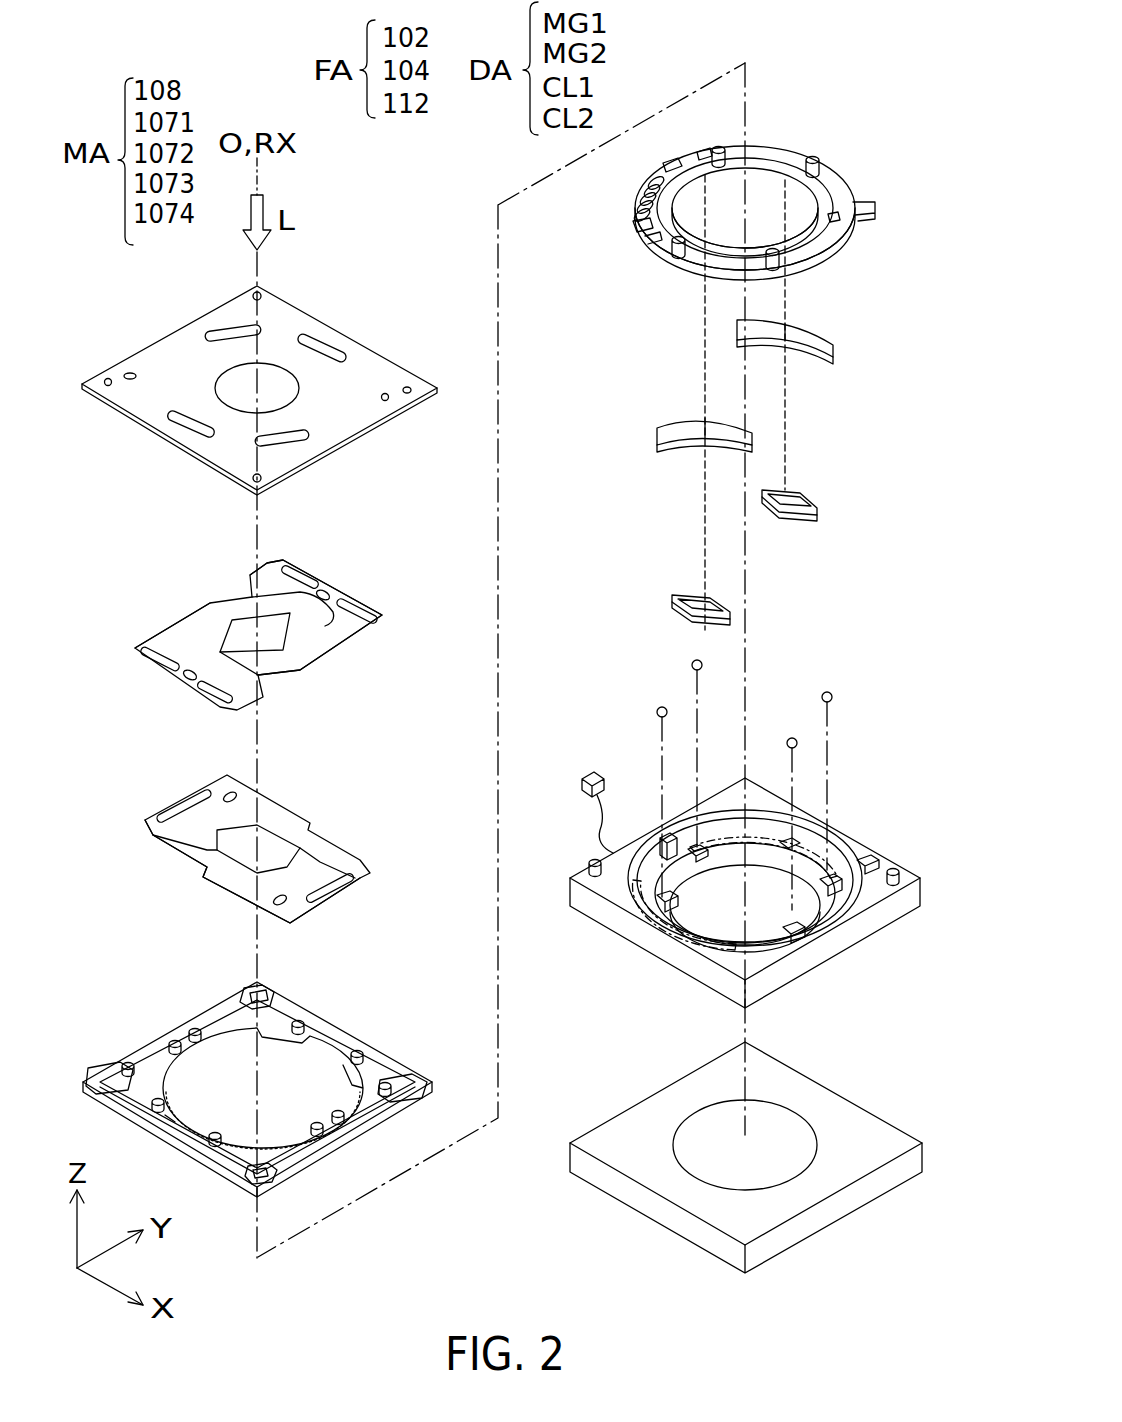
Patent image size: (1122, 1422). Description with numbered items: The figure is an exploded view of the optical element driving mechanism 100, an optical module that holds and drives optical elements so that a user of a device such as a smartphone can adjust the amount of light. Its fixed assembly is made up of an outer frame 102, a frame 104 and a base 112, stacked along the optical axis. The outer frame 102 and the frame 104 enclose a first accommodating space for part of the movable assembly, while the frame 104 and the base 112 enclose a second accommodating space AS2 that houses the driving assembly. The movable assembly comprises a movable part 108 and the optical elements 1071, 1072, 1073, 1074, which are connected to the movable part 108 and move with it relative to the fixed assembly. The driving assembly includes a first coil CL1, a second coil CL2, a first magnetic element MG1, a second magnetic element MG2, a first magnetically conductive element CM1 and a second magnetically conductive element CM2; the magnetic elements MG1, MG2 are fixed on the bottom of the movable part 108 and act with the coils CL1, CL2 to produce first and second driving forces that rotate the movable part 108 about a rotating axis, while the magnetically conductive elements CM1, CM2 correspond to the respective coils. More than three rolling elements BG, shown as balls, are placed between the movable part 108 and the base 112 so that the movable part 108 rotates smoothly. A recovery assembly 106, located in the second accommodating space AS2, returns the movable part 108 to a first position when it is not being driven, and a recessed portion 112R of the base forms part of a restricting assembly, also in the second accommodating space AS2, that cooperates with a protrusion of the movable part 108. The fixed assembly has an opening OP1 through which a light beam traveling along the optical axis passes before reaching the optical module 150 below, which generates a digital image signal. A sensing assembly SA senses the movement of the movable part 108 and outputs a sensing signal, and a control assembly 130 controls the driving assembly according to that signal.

The optical element driving mechanism 100 is at (108, 25).
The outer frame 102 is at (398, 360).
The frame 104 is at (402, 1062).
The recovery assembly 106 is at (623, 207).
The movable part 108 is at (840, 178).
The base 112 is at (770, 898).
The recessed portion 112R is at (868, 880).
The control assembly 130 is at (581, 774).
The optical module 150 is at (842, 1223).
The optical element 1071 is at (323, 638).
The optical element 1072 is at (327, 857).
The optical element 1073 is at (195, 632).
The optical element 1074 is at (230, 875).
The first magnetic element MG1 is at (682, 430).
The second magnetic element MG2 is at (812, 343).
The first coil CL1 is at (685, 593).
The second coil CL2 is at (812, 505).
The rolling elements BG is at (658, 710).
The sensing assembly SA is at (790, 843).
The first magnetically conductive element CM1 is at (670, 947).
The second magnetically conductive element CM2 is at (858, 897).
The second accommodating space AS2 is at (813, 915).
The opening OP1 is at (277, 363).